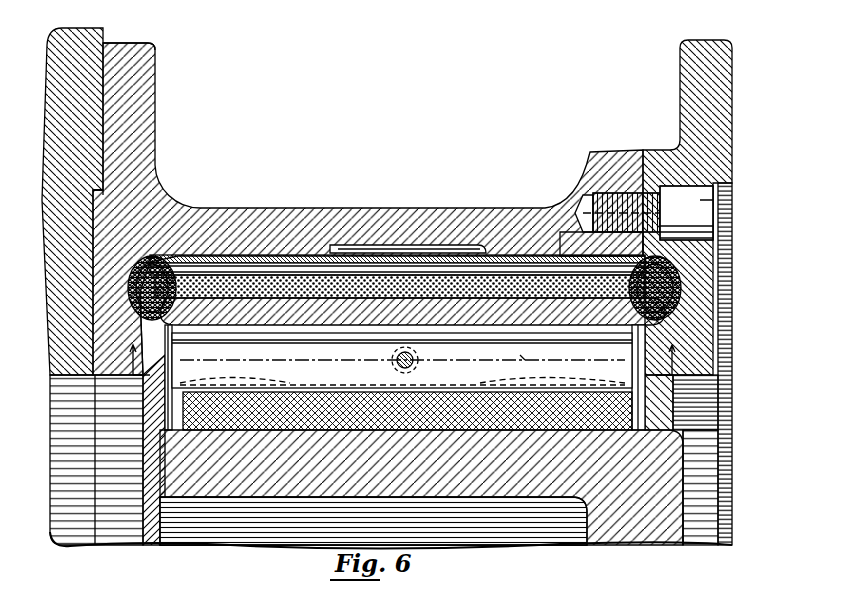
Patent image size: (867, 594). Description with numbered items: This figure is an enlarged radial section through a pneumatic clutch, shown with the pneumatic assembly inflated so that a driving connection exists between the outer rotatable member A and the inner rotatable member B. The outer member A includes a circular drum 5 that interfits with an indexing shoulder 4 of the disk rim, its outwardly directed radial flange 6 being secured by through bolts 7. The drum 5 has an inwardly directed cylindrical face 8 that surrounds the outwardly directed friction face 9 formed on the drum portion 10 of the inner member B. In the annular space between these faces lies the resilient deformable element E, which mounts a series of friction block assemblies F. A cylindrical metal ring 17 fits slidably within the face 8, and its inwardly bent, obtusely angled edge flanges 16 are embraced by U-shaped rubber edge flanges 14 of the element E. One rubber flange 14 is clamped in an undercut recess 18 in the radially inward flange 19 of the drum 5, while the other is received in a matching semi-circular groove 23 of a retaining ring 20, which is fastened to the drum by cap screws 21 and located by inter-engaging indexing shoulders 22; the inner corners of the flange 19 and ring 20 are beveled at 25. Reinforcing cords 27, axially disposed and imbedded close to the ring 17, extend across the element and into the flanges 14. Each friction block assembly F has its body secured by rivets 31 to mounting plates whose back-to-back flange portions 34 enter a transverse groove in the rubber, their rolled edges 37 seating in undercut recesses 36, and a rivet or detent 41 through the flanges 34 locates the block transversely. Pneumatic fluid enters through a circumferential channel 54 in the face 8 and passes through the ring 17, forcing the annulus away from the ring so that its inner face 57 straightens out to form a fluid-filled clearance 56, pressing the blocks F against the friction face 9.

The indexing shoulder 4 is at (104, 191).
The outer drum 5 is at (288, 208).
The radial flange 6 is at (144, 43).
The through bolts 7 is at (372, 445).
The inwardly directed cylindrical face 8 is at (220, 256).
The friction face 9 is at (346, 432).
The drum portion 10 is at (450, 498).
The rubber edge flanges 14 is at (140, 300).
The edge flanges of ring 16 is at (148, 262).
The cylindrical metal ring 17 is at (253, 255).
The undercut recess 18 is at (141, 320).
The radially inwardly extending flange 19 is at (95, 328).
The retaining ring 20 is at (734, 312).
The cap screws 21 is at (714, 222).
The indexing shoulders 22 is at (636, 164).
The semi-circular groove 23 is at (687, 207).
The beveled inner corners 25 is at (152, 452).
The reinforcing cords 27 is at (291, 272).
The rivets 31 is at (421, 487).
The flange portions 34 is at (334, 382).
The undercut recesses 36 is at (213, 335).
The rolled edges 37 is at (510, 345).
The rivet or detent 41 is at (392, 358).
The circumferential channel or recess 54 is at (370, 246).
The clearance 56 is at (528, 254).
The inner face of annulus 57 is at (496, 263).
The outer rotatable member A is at (437, 196).
The inner rotatable member B is at (708, 499).
The resilient deformable element E is at (467, 369).
The friction block assemblies F is at (700, 398).